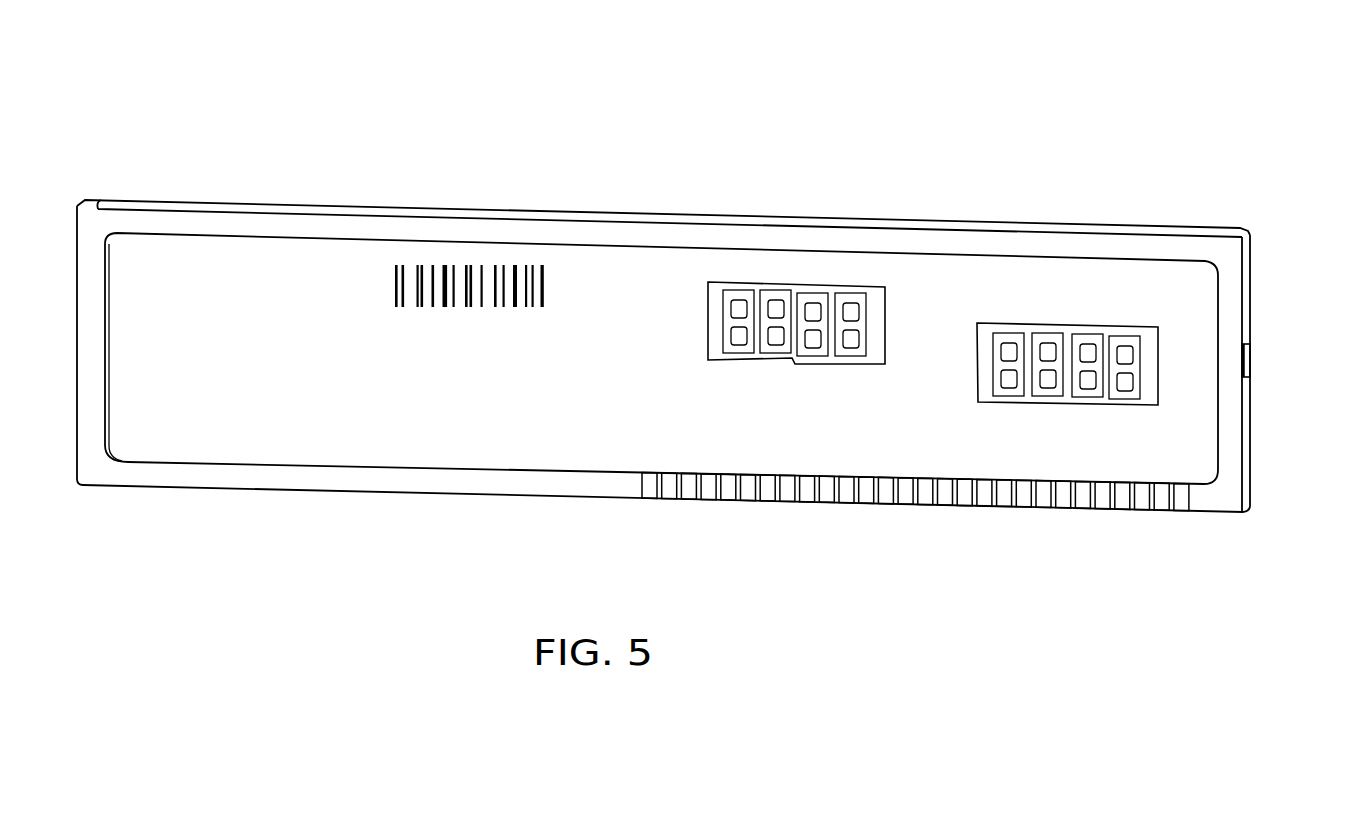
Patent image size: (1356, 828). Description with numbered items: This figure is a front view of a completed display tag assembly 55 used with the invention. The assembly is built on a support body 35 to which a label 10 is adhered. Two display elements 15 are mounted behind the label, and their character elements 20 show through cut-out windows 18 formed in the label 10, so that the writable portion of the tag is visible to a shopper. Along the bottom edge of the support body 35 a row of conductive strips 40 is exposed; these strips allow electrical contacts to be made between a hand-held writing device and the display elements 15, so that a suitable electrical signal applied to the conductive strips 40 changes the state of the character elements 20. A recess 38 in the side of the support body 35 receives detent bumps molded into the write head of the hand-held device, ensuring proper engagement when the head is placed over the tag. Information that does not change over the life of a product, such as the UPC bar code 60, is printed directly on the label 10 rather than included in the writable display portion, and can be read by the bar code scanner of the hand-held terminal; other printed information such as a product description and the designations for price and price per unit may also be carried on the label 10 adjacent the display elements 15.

The label 10 is at (622, 252).
The display element 15 is at (958, 252).
The cut-out windows 18 is at (1152, 327).
The character elements 20 is at (775, 295).
The support body 35 is at (252, 492).
The recesses 38 is at (1250, 360).
The conductive strips 40 is at (1112, 502).
The display tag assembly 55 is at (325, 203).
The UPC bar code 60 is at (457, 266).